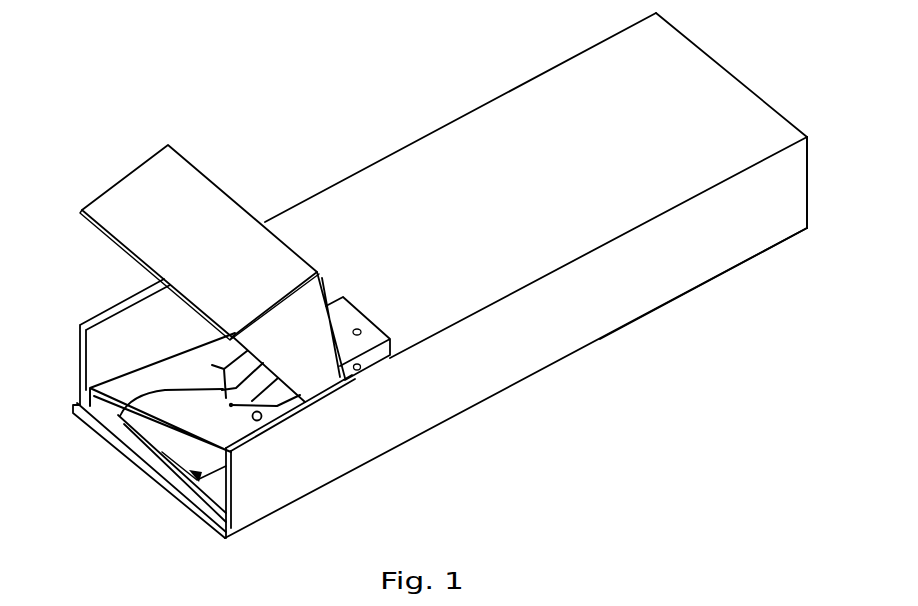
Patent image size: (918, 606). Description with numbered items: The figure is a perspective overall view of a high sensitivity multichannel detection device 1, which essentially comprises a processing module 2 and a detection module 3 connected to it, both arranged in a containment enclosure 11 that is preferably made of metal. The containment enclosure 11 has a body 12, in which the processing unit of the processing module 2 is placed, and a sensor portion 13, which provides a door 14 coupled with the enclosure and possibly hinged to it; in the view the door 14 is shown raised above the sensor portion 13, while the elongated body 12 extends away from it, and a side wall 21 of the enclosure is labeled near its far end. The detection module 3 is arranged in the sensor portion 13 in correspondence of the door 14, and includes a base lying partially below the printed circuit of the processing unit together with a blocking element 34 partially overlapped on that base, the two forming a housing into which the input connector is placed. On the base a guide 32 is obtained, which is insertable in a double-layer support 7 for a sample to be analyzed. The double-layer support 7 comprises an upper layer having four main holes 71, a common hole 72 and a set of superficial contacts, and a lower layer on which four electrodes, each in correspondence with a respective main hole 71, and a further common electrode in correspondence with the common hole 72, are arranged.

The high sensitivity multichannel detection device 1 is at (809, 101).
The containment enclosure 11 is at (449, 123).
The body 12 is at (583, 78).
The sensor portion 13 is at (240, 515).
The door 14 is at (125, 188).
The processing module 2 is at (752, 239).
The side wall 21 is at (797, 210).
The detection module 3 is at (98, 288).
The guide 32 is at (163, 447).
The blocking element 34 is at (320, 390).
The double-layer support 7 is at (207, 427).
The main holes 71 is at (103, 420).
The common hole 72 is at (262, 418).